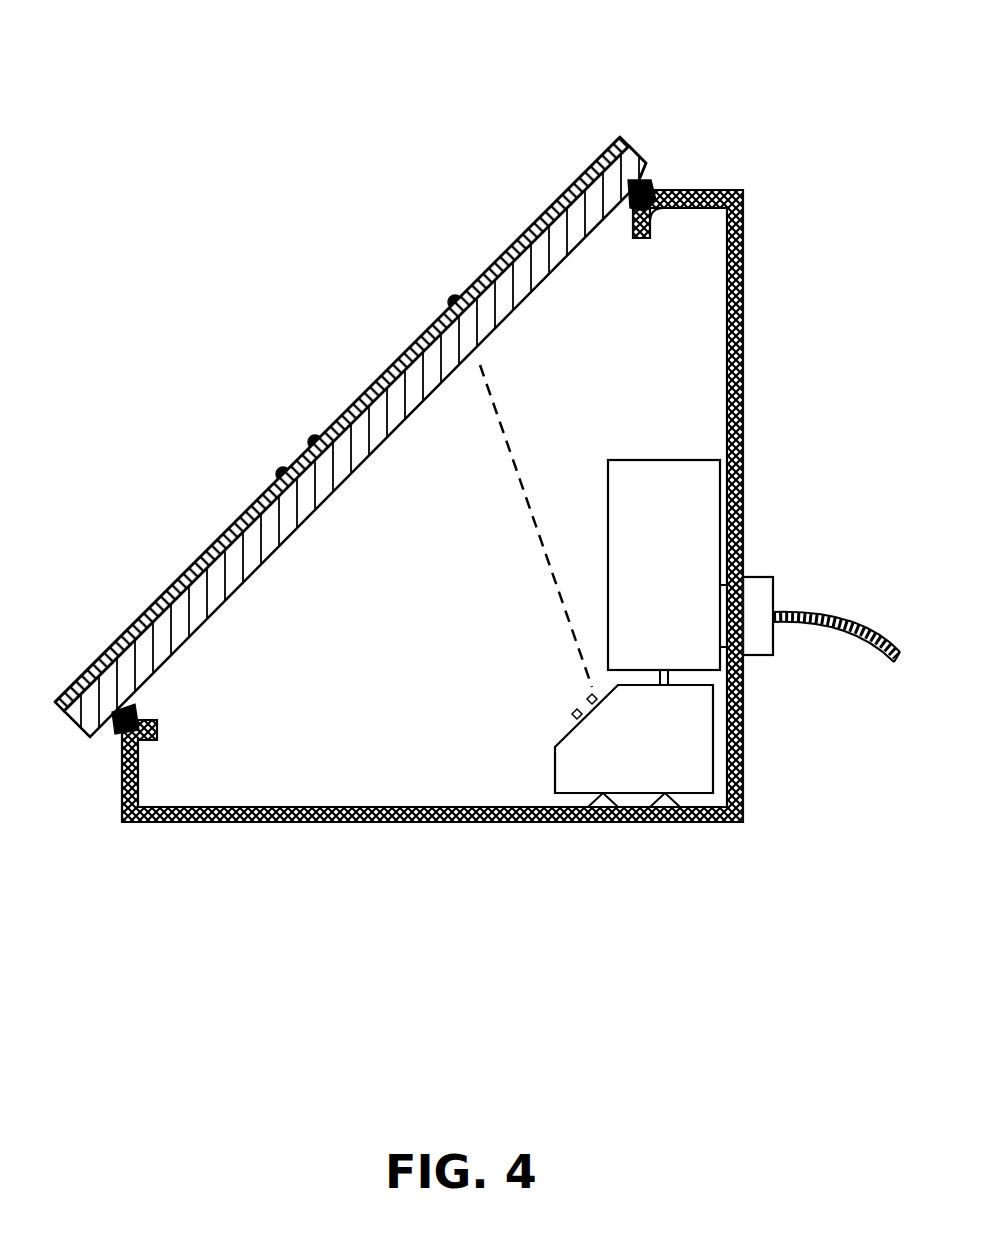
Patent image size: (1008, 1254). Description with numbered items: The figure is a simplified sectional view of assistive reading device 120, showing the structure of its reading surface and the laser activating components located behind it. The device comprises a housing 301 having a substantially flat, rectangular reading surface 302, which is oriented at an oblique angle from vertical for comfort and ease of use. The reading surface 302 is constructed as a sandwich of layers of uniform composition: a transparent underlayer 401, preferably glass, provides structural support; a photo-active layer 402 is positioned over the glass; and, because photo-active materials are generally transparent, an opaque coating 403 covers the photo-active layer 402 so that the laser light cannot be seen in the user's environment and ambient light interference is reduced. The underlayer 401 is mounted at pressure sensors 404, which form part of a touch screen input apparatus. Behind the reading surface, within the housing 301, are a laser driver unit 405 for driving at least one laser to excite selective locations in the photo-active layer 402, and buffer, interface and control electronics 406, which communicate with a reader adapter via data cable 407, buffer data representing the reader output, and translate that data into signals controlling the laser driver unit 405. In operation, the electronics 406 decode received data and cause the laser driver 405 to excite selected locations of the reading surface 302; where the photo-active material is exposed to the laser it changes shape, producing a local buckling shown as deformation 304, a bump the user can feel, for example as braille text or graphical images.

The assistive reading device 120 is at (464, 44).
The housing 301 is at (745, 260).
The reading surface 302 is at (520, 228).
The deformation 304 is at (453, 299).
The transparent underlayer 401 is at (640, 160).
The photo-active layer 402 is at (626, 142).
The opaque coating 403 is at (620, 134).
The pressure sensors 404 is at (650, 184).
The laser driver unit 405 is at (703, 717).
The buffer, interface and control electronics 406 is at (710, 498).
The data cable 407 is at (783, 610).